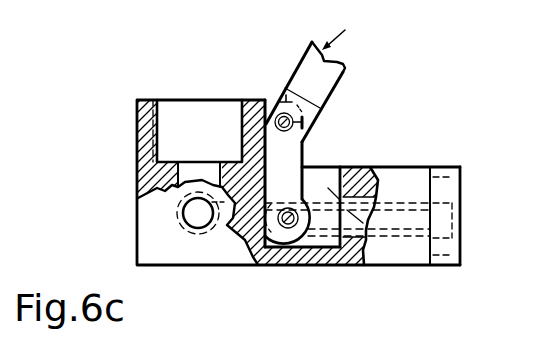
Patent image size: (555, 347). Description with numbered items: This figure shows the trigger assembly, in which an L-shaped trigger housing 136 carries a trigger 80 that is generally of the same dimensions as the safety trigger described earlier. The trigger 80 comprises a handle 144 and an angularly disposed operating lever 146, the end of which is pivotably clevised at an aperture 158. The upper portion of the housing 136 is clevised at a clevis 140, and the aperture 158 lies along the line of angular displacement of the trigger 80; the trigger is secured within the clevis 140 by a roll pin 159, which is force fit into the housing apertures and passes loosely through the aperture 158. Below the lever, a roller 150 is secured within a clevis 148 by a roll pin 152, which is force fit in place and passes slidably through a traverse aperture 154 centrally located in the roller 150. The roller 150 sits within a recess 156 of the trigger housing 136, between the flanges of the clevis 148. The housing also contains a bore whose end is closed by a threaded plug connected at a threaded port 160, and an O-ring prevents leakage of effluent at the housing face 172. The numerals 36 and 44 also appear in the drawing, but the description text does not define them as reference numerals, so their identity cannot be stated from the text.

The housing body 36 is at (173, 190).
The cavity 44 is at (158, 120).
The trigger 80 is at (344, 31).
The trigger housing 136 is at (403, 167).
The clevis 140 is at (284, 71).
The handle 144 is at (344, 65).
The operating lever 146 is at (297, 165).
The clevis 148 is at (265, 252).
The roller 150 is at (350, 212).
The roll pin 152 is at (320, 250).
The traverse aperture 154 is at (288, 229).
The recess 156 is at (376, 245).
The aperture 158 is at (308, 128).
The roll pin 159 is at (304, 121).
The threaded port 160 is at (207, 232).
The housing face 172 is at (462, 190).